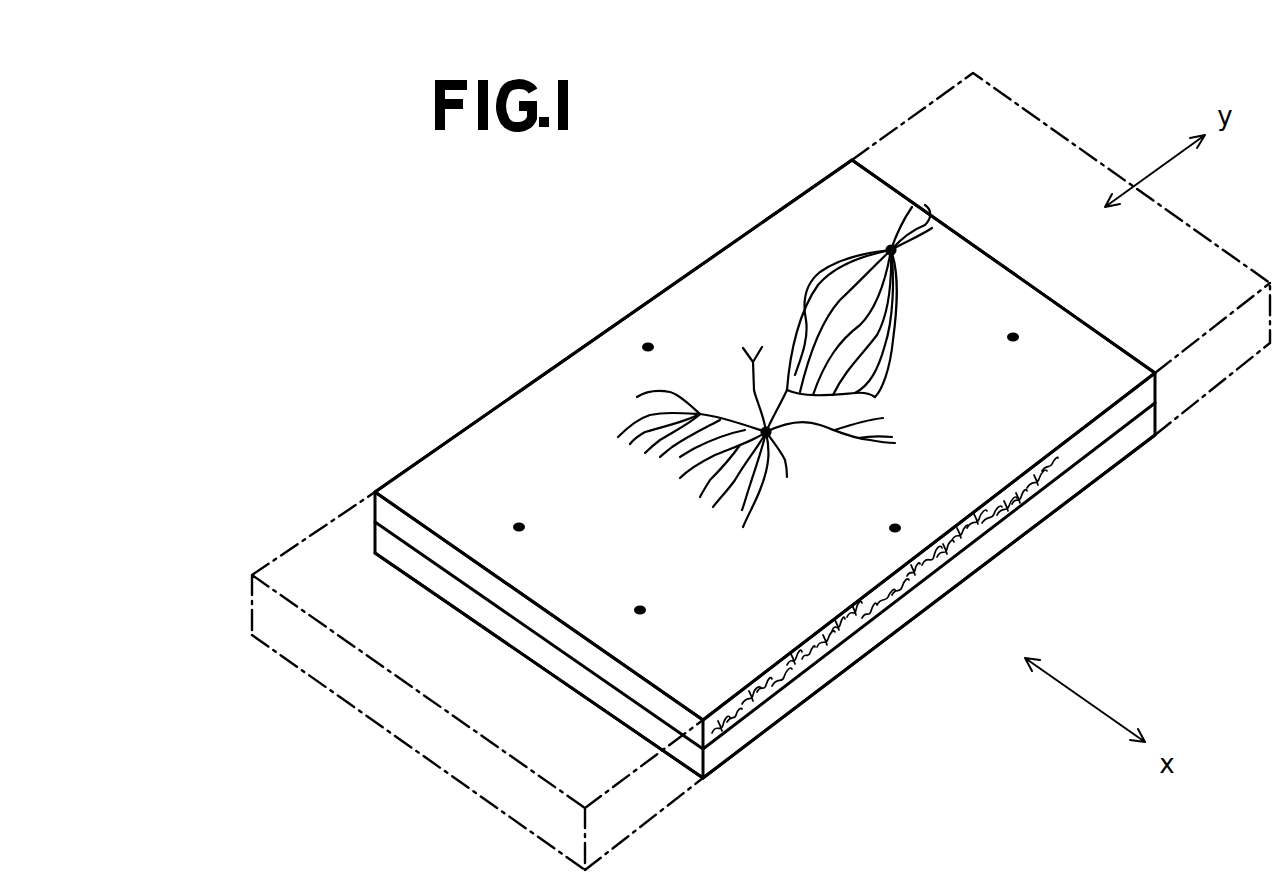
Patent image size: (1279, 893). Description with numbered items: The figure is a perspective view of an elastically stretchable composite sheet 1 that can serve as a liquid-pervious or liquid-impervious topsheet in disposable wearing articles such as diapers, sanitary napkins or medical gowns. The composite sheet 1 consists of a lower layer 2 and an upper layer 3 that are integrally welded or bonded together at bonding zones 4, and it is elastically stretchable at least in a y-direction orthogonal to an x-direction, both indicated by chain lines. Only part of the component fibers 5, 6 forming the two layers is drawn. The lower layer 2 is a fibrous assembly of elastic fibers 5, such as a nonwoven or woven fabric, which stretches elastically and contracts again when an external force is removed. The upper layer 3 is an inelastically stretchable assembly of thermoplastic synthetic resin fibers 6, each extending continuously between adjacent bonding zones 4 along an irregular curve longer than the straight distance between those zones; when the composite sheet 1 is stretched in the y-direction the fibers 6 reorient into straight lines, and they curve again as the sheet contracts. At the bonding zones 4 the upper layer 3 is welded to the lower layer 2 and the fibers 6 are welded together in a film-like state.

The composite sheet 1 is at (1137, 76).
The lower layer 2 is at (1135, 472).
The upper layer 3 is at (1095, 305).
The bonding zones 4 is at (773, 437).
The fibers 5 is at (787, 713).
The fibers 6 is at (637, 397).